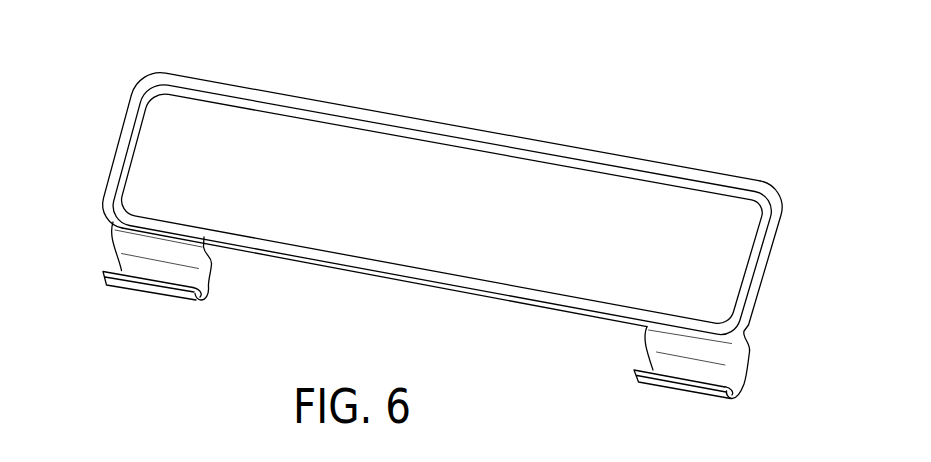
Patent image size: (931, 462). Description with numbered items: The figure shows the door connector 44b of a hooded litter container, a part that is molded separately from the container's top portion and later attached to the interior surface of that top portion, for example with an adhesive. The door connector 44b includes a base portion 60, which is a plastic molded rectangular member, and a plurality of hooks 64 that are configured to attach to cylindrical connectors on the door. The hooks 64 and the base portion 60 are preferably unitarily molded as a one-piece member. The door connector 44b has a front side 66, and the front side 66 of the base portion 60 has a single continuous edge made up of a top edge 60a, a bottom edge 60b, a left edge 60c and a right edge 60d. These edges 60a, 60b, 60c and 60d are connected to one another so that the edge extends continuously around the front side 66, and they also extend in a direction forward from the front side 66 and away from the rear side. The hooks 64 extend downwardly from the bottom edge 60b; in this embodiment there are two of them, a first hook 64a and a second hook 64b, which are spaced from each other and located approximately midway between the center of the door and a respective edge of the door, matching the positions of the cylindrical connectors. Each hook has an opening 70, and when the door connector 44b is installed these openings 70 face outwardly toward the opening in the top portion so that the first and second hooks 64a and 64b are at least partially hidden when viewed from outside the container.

The base portion 60 is at (449, 205).
The top edge 60a is at (562, 142).
The bottom edge 60b is at (547, 303).
The left edge 60c is at (767, 283).
The right edge 60d is at (117, 147).
The door connector 44b is at (453, 123).
The front side 66 is at (278, 137).
The hooks 64 is at (143, 288).
The first hook 64a is at (680, 387).
The second hook 64b is at (208, 300).
The openings 70 is at (131, 268).